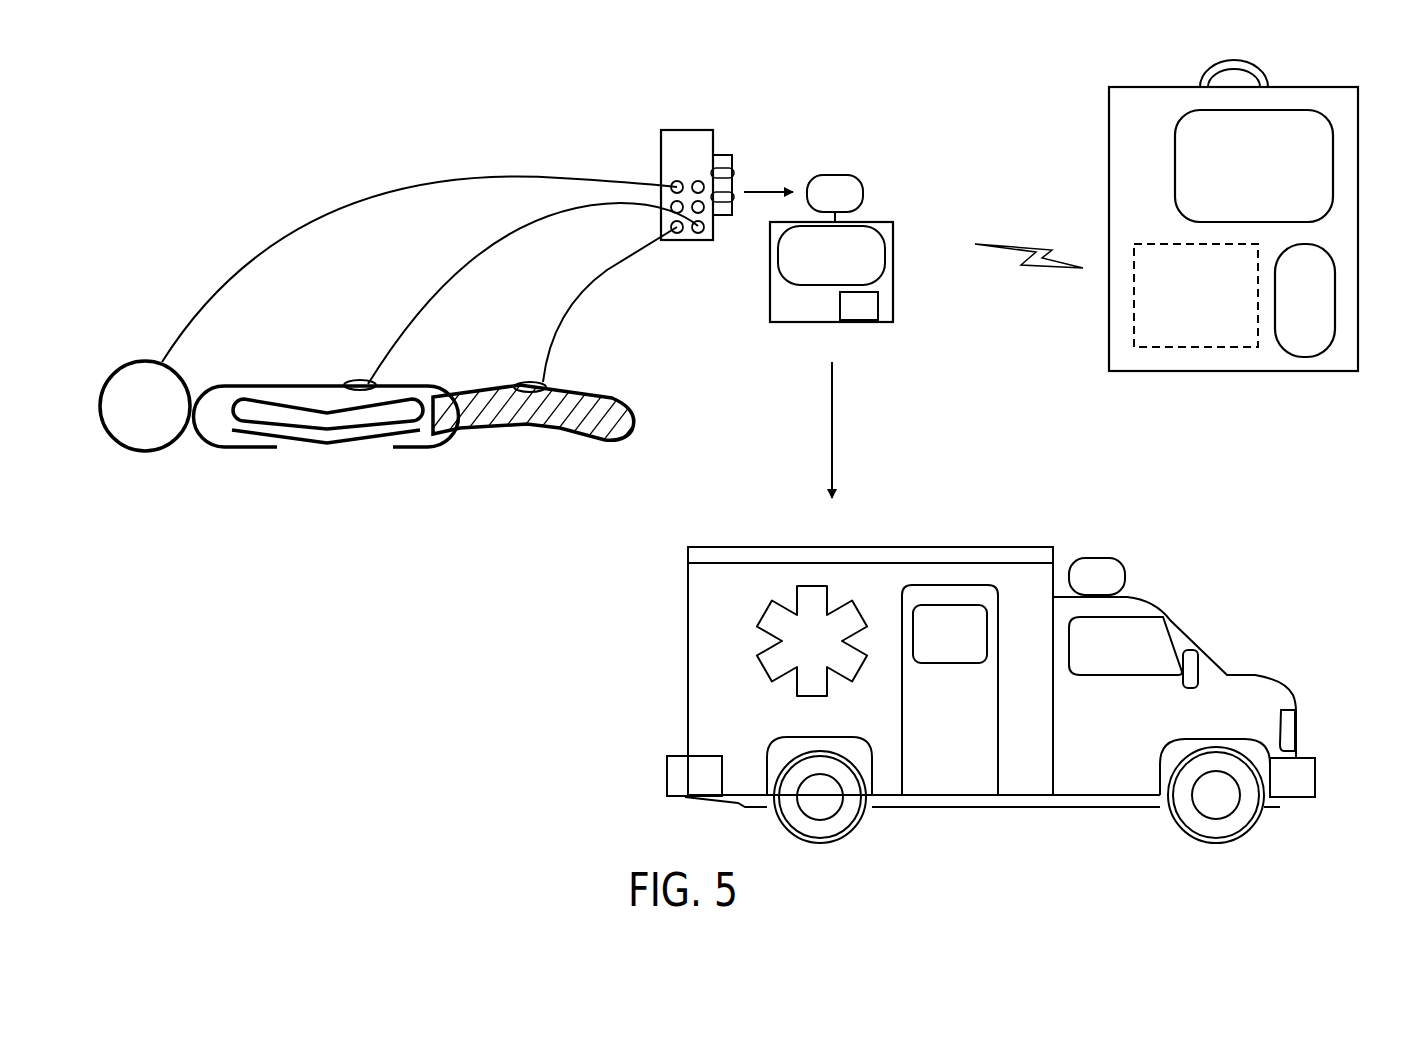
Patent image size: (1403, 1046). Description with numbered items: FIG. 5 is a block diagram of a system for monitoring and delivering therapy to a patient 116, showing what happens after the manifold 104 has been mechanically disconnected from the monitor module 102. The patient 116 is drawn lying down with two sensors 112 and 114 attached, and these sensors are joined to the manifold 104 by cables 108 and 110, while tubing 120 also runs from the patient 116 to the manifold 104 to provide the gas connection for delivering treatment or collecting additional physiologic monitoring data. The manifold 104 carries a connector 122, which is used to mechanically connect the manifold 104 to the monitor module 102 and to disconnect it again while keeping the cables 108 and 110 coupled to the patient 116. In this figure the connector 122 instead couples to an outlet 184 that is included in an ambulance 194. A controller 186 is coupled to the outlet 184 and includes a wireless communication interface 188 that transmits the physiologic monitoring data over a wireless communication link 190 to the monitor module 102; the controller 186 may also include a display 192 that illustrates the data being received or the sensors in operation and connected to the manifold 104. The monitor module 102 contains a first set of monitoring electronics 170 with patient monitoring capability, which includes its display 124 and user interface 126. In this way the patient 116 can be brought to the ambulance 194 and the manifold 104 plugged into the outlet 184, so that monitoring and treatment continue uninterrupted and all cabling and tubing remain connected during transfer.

The monitor module 102 is at (1147, 87).
The manifold 104 is at (683, 130).
The cable 108 is at (440, 290).
The cable 110 is at (567, 300).
The sensor 112 is at (358, 380).
The sensor 114 is at (528, 382).
The patient 116 is at (637, 422).
The tubing 120 is at (432, 195).
The connector 122 is at (725, 155).
The display 124 is at (1292, 110).
The user interface 126 is at (1335, 290).
The first set of monitoring electronics 170 is at (1152, 244).
The outlet 184 is at (835, 173).
The controller 186 is at (893, 318).
The wireless communication interface 188 is at (878, 305).
The wireless communication link 190 is at (1035, 245).
The display 192 is at (885, 250).
The ambulance 194 is at (765, 538).